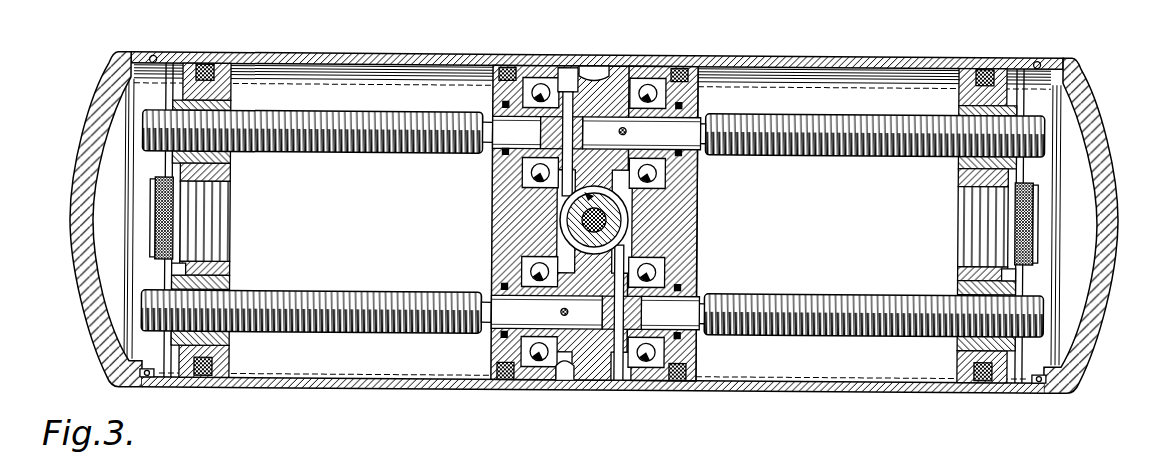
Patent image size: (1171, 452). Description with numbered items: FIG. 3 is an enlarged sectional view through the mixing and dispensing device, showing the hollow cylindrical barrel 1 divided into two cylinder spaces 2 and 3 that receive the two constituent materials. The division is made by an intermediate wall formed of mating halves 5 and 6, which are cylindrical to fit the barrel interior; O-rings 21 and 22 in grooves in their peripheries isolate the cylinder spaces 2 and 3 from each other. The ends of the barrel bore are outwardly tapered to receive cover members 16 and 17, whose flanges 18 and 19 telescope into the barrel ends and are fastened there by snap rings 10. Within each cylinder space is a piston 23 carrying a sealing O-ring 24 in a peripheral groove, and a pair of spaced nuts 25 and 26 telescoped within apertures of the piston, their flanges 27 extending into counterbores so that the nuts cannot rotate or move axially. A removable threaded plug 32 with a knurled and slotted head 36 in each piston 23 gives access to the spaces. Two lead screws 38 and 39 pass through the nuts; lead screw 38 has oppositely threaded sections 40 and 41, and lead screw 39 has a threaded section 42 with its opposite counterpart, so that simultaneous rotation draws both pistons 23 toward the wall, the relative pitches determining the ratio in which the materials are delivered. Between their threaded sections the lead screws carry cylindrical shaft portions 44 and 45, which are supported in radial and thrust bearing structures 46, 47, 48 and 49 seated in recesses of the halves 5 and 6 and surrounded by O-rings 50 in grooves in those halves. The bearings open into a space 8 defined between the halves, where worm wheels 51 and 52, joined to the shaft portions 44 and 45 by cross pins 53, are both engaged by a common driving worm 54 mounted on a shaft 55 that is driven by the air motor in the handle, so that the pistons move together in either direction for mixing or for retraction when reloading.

The barrel 1 is at (878, 55).
The cylinder space 2 is at (308, 372).
The cylinder space 3 is at (920, 370).
The wall half 5 is at (490, 214).
The wall half 6 is at (700, 243).
The space 8 is at (619, 384).
The snap ring 10 is at (153, 60).
The cover member 16 is at (97, 338).
The cover member 17 is at (1108, 262).
The flange 18 is at (146, 381).
The flange 19 is at (1039, 381).
The O-ring 21 is at (504, 382).
The O-ring 22 is at (682, 382).
The piston 23 is at (232, 354).
The sealing O-ring 24 is at (205, 379).
The nut 25 is at (228, 110).
The nut 26 is at (226, 286).
The flange 27 is at (174, 279).
The threaded plug 32 is at (222, 206).
The knurled and slotted head 36 is at (150, 189).
The lead screw 38 is at (317, 136).
The lead screw 39 is at (316, 289).
The threaded section 40 is at (436, 117).
The threaded section 41 is at (866, 120).
The threaded section 42 is at (322, 296).
The cylindrical shaft portion 44 is at (596, 132).
The cylindrical shaft portion 45 is at (848, 299).
The radial and thrust bearing structure 46 is at (541, 86).
The radial and thrust bearing structure 47 is at (649, 86).
The radial and thrust bearing structure 48 is at (528, 274).
The radial and thrust bearing structure 49 is at (649, 362).
The O-ring 50 is at (683, 105).
The worm wheel 51 is at (592, 72).
The worm wheel 52 is at (596, 364).
The cross pin 53 is at (572, 128).
The driving worm 54 is at (601, 213).
The shaft 55 is at (603, 228).